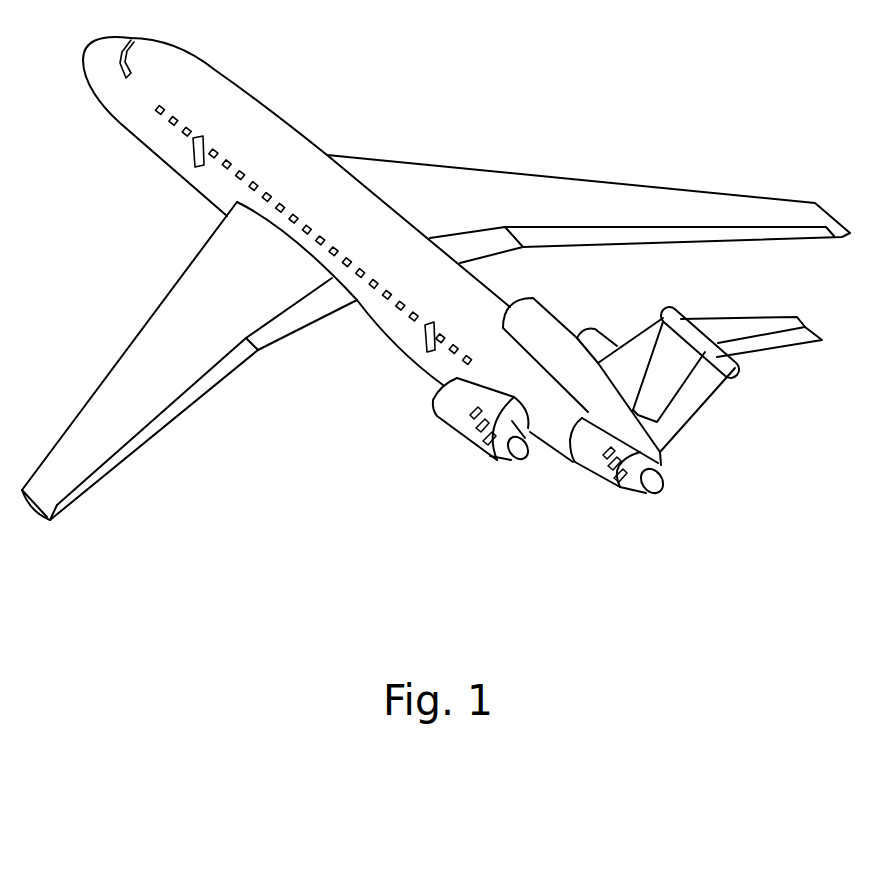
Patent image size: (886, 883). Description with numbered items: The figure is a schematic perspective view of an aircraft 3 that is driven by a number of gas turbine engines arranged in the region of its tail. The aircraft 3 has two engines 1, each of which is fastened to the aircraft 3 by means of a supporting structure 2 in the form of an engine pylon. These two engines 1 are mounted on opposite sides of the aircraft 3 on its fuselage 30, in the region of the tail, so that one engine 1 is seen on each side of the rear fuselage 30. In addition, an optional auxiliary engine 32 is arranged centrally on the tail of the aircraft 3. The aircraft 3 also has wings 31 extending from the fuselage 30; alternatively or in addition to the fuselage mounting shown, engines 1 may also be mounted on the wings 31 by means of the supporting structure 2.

The engine 1 is at (593, 343).
The supporting structure 2 is at (537, 427).
The aircraft 3 is at (403, 155).
The fuselage 30 is at (413, 350).
The wings 31 is at (562, 190).
The auxiliary engine 32 is at (587, 460).